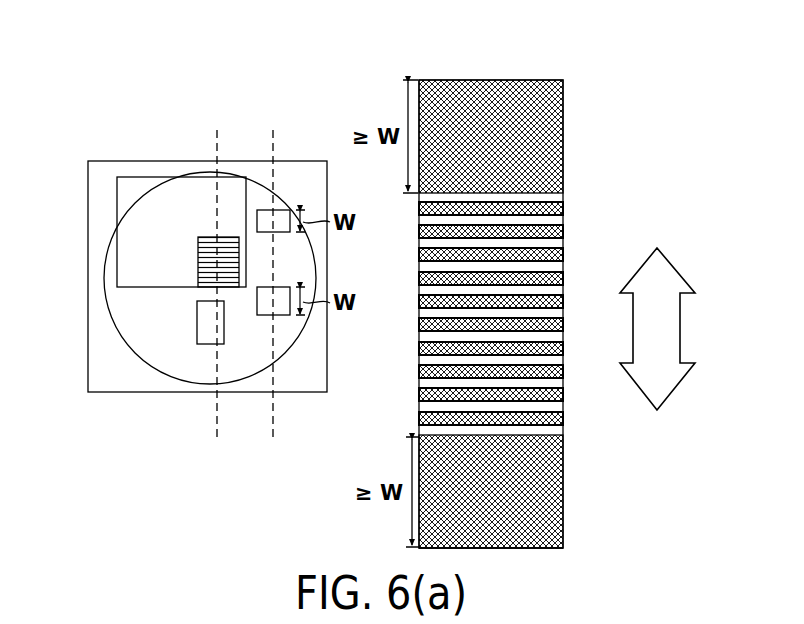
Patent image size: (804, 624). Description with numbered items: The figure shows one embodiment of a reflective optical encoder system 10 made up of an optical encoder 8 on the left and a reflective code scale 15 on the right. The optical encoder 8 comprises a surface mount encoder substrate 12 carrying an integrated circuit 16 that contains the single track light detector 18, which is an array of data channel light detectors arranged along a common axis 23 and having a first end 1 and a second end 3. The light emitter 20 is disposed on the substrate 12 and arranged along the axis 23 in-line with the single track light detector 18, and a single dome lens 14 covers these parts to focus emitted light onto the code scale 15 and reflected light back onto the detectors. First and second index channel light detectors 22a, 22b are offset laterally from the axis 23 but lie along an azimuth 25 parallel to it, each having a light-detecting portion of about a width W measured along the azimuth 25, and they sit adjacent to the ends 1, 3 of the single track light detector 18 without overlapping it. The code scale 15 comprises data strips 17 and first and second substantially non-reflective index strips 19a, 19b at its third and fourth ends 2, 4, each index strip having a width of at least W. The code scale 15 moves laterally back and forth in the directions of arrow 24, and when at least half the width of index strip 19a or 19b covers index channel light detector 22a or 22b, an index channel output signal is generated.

The first end 1 is at (205, 290).
The third end 2 is at (503, 549).
The second end 3 is at (213, 235).
The fourth end 4 is at (526, 309).
The optical encoder 8 is at (93, 97).
The reflective optical encoder system 10 is at (88, 437).
The encoder substrate 12 is at (103, 175).
The dome lens 14 is at (267, 284).
The code scale 15 is at (587, 88).
The integrated circuit 16 is at (143, 178).
The data strips 17 is at (578, 200).
The single track light detector 18 is at (149, 232).
The first index strip 19a is at (533, 492).
The second index strip 19b is at (527, 143).
The light emitter 20 is at (138, 324).
The first index channel light detector 22a is at (267, 302).
The second index channel light detector 22b is at (267, 227).
The axis 23 is at (217, 420).
The arrow 24 is at (683, 330).
The azimuth 25 is at (275, 420).